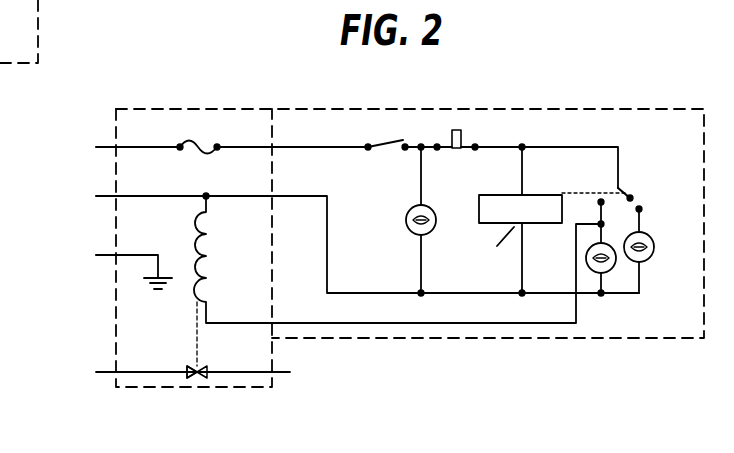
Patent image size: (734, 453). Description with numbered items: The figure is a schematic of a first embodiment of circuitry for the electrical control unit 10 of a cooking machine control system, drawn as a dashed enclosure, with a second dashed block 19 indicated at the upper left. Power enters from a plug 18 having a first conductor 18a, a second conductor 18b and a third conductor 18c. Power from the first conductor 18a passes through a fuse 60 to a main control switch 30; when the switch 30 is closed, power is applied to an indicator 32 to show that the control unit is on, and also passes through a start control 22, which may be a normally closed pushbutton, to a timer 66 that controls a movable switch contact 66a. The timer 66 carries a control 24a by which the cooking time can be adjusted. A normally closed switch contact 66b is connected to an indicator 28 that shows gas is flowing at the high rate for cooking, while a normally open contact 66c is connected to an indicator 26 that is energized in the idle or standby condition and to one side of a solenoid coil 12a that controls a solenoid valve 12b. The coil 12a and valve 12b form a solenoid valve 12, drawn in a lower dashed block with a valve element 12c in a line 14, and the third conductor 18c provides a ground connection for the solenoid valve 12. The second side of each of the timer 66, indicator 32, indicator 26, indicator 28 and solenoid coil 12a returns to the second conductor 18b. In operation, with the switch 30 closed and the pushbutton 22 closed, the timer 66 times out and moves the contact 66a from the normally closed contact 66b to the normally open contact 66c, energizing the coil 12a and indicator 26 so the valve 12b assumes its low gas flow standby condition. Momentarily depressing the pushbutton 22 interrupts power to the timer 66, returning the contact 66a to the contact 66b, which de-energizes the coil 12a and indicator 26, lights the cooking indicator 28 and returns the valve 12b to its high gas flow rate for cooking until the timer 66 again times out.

The electrical control unit 10 is at (524, 108).
The adjacent block 19 is at (19, 31).
The plug 18 is at (51, 113).
The first conductor 18a is at (106, 146).
The second conductor 18b is at (106, 195).
The third conductor 18c is at (106, 254).
The fuse 60 is at (200, 151).
The solenoid coil 12a is at (192, 236).
The solenoid valve 12 is at (233, 390).
The solenoid valve 12b is at (197, 379).
The valve actuator linkage 12c is at (193, 344).
The water supply line 14 is at (106, 370).
The main control switch 30 is at (387, 140).
The start control 22 is at (445, 130).
The indicator 32 is at (435, 230).
The timer 66 is at (500, 195).
The control 24a is at (538, 193).
The movable switch contact 66a is at (632, 197).
The normally closed switch contact 66b is at (641, 210).
The normally open contact 66c is at (600, 202).
The indicator 28 is at (643, 263).
The indicator 26 is at (606, 273).